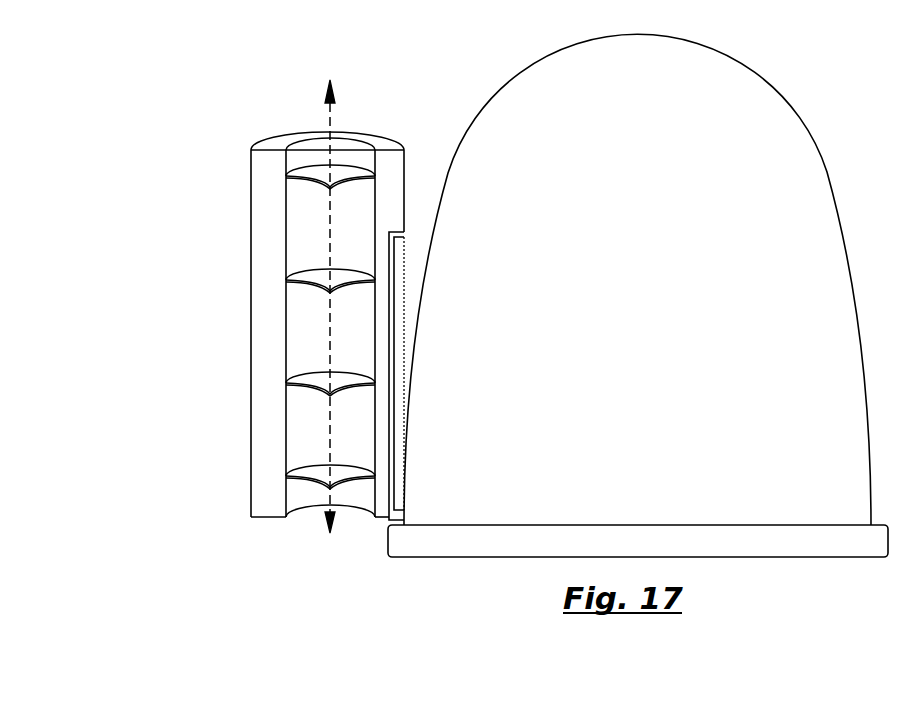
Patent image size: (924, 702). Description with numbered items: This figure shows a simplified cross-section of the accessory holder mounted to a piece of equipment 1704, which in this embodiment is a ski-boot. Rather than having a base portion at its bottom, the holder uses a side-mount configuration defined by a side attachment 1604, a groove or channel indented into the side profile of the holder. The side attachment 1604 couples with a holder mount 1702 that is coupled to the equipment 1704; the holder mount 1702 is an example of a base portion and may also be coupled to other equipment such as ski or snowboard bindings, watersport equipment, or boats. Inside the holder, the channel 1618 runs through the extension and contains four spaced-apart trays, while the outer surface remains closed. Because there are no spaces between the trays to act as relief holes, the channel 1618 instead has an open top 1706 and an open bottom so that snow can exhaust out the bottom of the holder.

The open top channel 1618 is at (333, 108).
The equipment 1704 is at (345, 143).
The holder mount 1702 is at (415, 262).
The side attachment 1604 is at (395, 514).
The open top 1706 is at (316, 513).